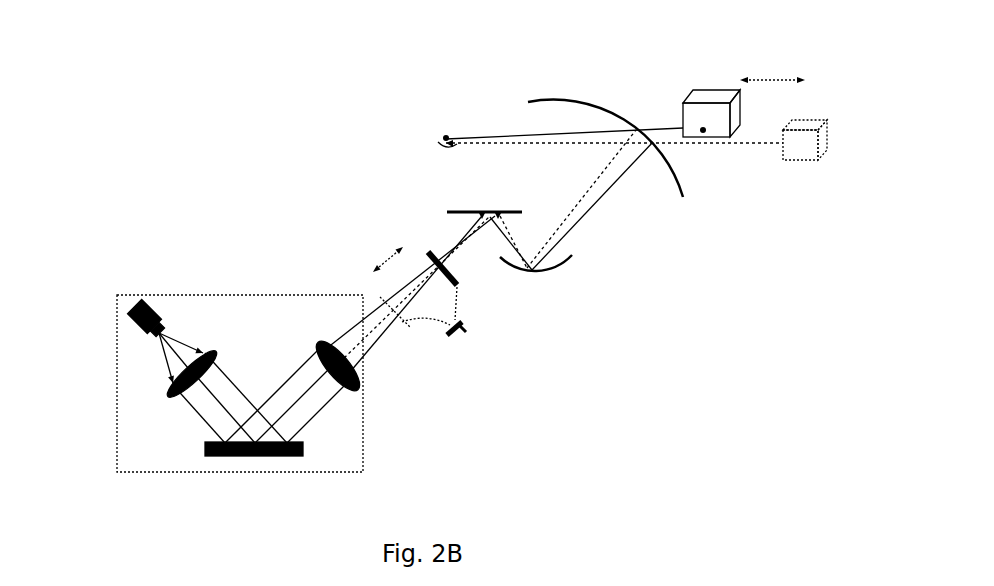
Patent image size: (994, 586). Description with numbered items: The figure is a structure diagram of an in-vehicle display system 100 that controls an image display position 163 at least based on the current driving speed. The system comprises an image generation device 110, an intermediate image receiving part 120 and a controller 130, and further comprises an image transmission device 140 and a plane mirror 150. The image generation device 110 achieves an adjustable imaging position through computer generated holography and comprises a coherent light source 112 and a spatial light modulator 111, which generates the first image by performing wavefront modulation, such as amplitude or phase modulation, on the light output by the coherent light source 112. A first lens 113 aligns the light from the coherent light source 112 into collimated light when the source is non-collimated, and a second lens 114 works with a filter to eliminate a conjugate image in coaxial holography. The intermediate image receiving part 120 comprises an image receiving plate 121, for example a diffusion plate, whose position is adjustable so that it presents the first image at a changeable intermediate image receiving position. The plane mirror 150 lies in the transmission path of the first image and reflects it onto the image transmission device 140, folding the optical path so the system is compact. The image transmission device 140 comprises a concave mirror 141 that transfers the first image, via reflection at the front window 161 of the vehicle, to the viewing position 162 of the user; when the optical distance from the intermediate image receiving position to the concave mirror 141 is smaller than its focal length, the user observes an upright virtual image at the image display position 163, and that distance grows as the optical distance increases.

The in-vehicle display system 100 is at (784, 28).
The image generation device 110 is at (240, 363).
The spatial light modulator 111 is at (231, 476).
The coherent light source 112 is at (113, 340).
The first lens 113 is at (134, 393).
The second lens 114 is at (380, 393).
The intermediate image receiving part 120 is at (359, 245).
The image receiving plate 121 is at (359, 245).
The controller 130 is at (504, 356).
The image transmission device 140 is at (600, 292).
The concave mirror 141 is at (600, 292).
The plane mirror 150 is at (438, 192).
The front window 161 is at (564, 134).
The viewing position 162 is at (387, 112).
The image display position 163 is at (735, 156).